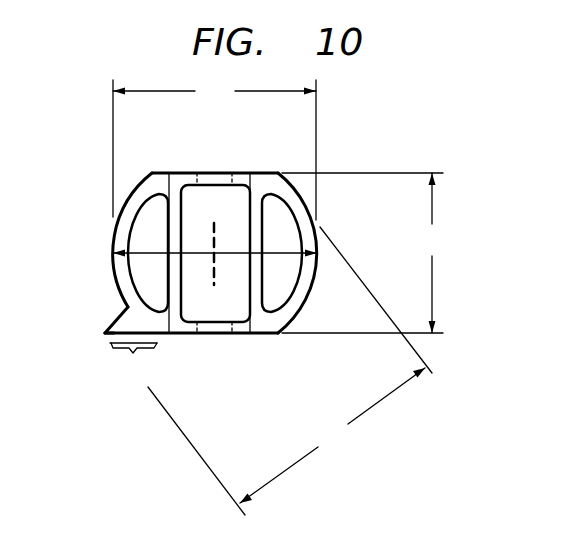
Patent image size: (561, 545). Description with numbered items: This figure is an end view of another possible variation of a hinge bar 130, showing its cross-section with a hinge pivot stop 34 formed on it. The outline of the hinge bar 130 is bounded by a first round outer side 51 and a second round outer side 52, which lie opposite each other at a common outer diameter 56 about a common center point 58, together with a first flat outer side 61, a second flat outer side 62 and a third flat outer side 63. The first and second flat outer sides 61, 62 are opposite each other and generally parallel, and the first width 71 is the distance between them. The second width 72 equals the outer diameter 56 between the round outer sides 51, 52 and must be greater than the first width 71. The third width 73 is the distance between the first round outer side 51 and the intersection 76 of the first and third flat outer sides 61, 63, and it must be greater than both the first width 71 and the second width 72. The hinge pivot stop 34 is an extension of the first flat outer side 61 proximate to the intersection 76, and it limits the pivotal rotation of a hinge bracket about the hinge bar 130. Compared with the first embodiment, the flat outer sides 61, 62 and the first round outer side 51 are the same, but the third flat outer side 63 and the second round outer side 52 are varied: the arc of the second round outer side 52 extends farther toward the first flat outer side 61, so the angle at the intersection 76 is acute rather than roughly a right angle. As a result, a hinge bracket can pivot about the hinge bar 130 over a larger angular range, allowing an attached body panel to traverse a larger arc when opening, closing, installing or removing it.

The hinge bar 130 is at (91, 233).
The second flat outer side 62 is at (215, 172).
The first round outer side 51 is at (312, 293).
The first flat outer side 61 is at (217, 336).
The third flat outer side 63 is at (117, 318).
The second round outer side 52 is at (112, 267).
The intersection 76 is at (106, 334).
The hinge pivot stop 34 is at (133, 364).
The outer diameter 56 is at (193, 252).
The center point 58 is at (218, 260).
The second width 72 is at (215, 167).
The first width 71 is at (363, 253).
The third width 73 is at (290, 371).